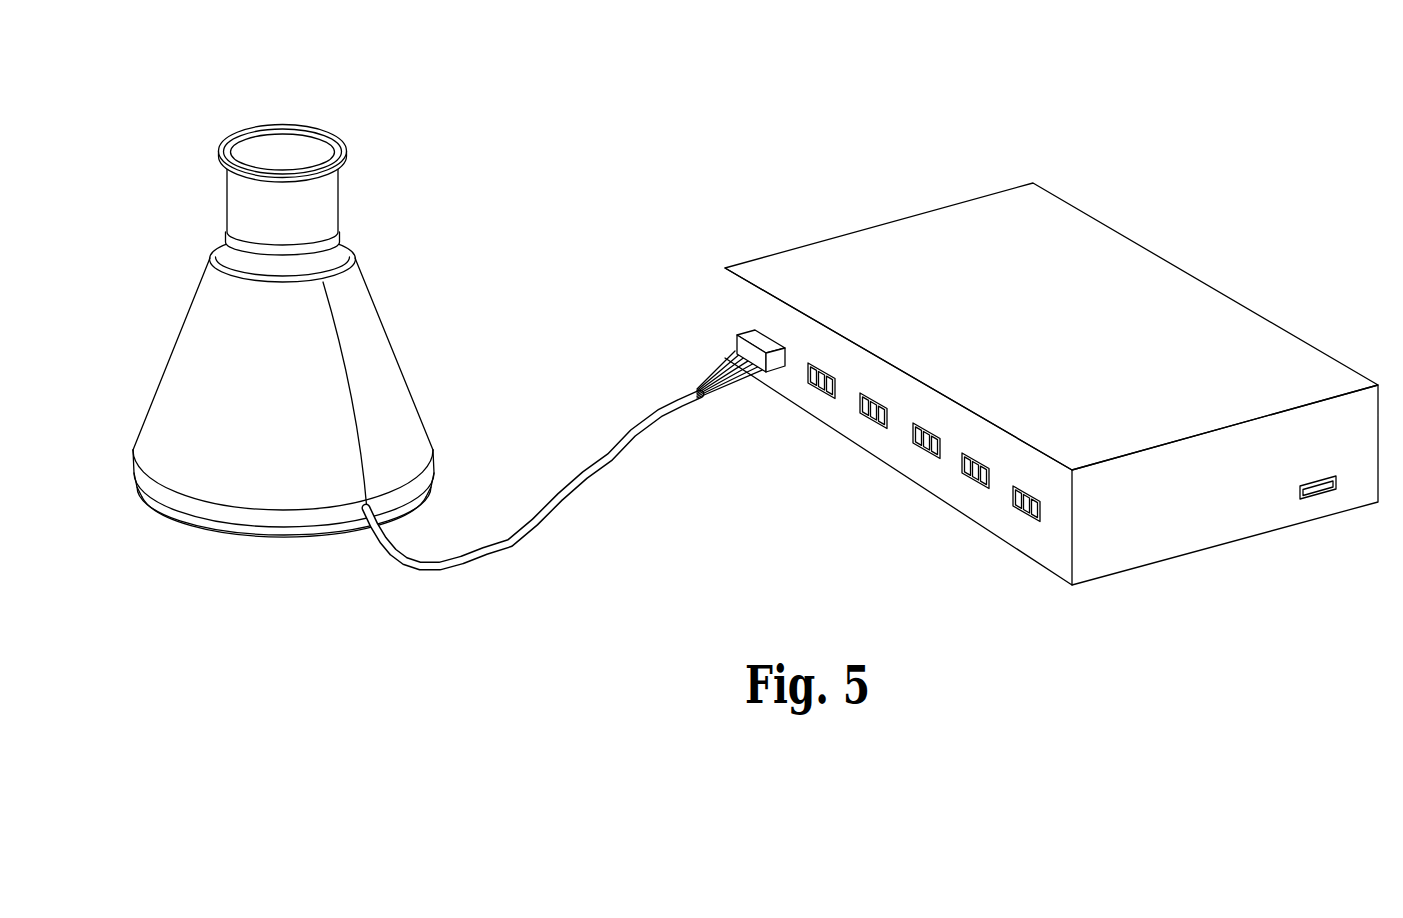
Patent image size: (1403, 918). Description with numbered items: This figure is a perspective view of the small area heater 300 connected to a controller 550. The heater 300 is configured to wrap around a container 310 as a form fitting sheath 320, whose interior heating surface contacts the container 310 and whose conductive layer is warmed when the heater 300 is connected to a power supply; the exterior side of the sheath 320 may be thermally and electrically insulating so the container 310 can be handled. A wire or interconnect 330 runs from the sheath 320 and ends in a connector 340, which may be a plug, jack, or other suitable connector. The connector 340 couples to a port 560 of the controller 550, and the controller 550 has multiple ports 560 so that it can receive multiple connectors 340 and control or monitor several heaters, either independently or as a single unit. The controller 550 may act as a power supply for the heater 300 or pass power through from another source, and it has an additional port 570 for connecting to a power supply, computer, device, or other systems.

The small area heater 300 is at (586, 172).
The container 310 is at (347, 191).
The form fitting sheath 320 is at (399, 342).
The wire or interconnect 330 is at (546, 514).
The connector 340 is at (770, 379).
The controller 550 is at (874, 222).
The port 560 is at (793, 373).
The additional port 570 is at (1323, 506).